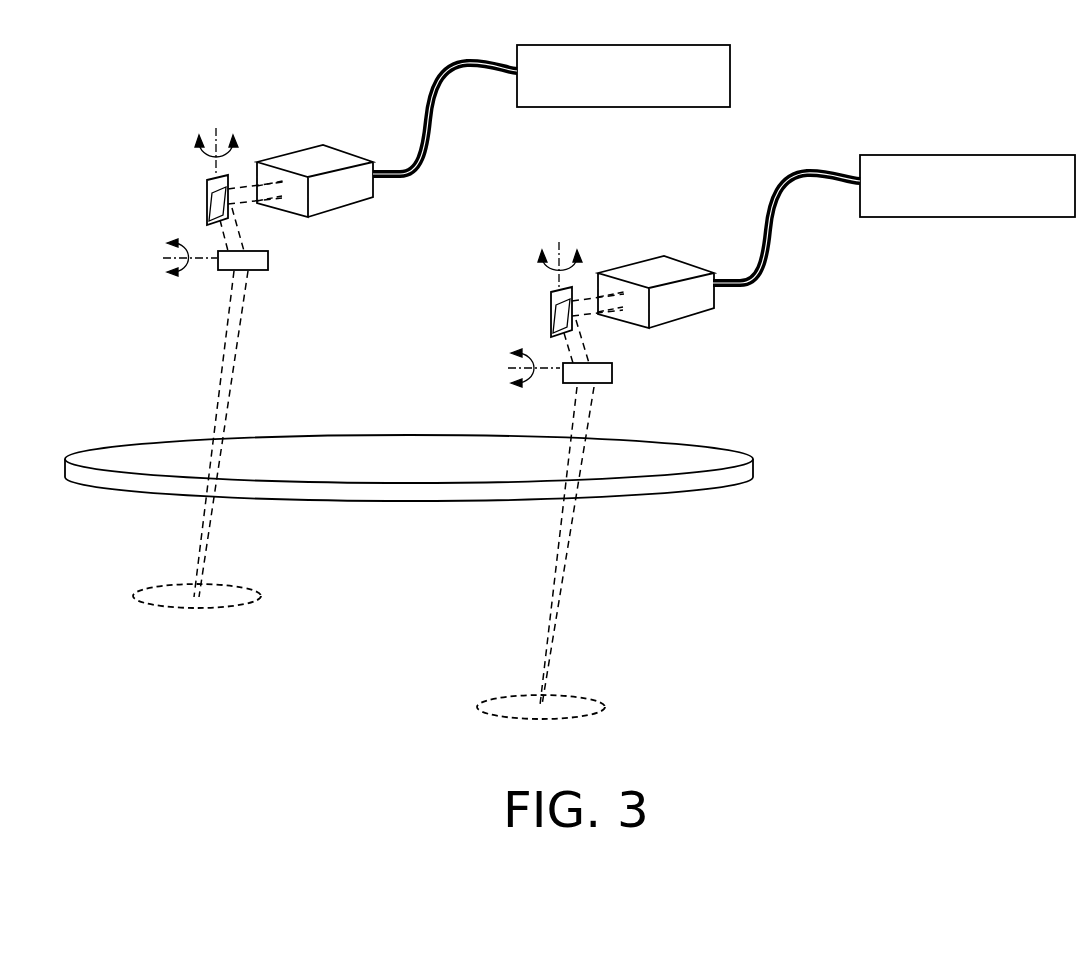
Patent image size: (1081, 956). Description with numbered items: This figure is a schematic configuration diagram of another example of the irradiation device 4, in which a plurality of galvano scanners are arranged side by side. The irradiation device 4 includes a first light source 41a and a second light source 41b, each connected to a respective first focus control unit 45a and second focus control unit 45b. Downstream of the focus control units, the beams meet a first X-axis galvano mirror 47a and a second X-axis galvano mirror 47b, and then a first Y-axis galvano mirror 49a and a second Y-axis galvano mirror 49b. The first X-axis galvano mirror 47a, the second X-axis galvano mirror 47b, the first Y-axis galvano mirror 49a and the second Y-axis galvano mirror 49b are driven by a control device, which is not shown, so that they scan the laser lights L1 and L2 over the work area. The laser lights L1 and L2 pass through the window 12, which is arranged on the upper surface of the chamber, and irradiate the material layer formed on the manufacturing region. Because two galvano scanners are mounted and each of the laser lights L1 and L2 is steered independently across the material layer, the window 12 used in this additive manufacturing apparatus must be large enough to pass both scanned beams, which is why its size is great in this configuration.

The irradiation device 4 is at (808, 563).
The window 12 is at (742, 482).
The first light source 41a is at (617, 107).
The second light source 41b is at (963, 217).
The first focus control unit 45a is at (350, 190).
The second focus control unit 45b is at (693, 300).
The first X-axis galvano mirror 47a is at (228, 180).
The second X-axis galvano mirror 47b is at (575, 290).
The first Y-axis galvano mirror 49a is at (218, 268).
The second Y-axis galvano mirror 49b is at (563, 380).
The laser light L1 is at (228, 389).
The laser light L2 is at (590, 417).